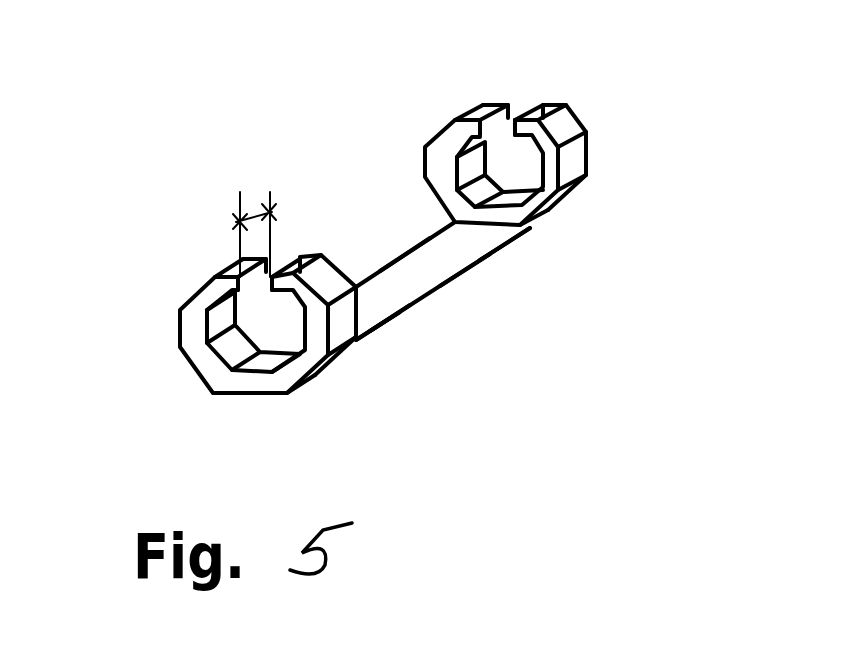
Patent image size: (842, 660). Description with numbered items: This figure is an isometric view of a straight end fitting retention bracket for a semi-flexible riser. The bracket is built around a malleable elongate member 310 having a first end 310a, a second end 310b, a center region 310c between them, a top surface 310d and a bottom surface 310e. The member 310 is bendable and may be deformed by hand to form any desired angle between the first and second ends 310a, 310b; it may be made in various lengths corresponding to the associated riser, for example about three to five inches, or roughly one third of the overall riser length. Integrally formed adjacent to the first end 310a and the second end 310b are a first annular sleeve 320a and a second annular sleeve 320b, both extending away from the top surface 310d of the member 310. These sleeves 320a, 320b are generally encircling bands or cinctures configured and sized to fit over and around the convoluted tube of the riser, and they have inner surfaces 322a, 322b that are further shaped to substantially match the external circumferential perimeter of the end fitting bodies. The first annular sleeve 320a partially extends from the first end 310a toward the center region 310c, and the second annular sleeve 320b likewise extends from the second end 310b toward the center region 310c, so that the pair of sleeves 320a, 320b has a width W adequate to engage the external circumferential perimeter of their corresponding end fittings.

The malleable elongate member 310 is at (424, 288).
The first end 310a is at (363, 352).
The second end 310b is at (535, 245).
The center region 310c is at (390, 235).
The top surface 310d is at (382, 296).
The bottom surface 310e is at (478, 275).
The first annular sleeve 320a is at (183, 330).
The second annular sleeve 320b is at (590, 160).
The inner surface 322a is at (307, 310).
The inner surface 322b is at (448, 153).
The width W is at (252, 205).